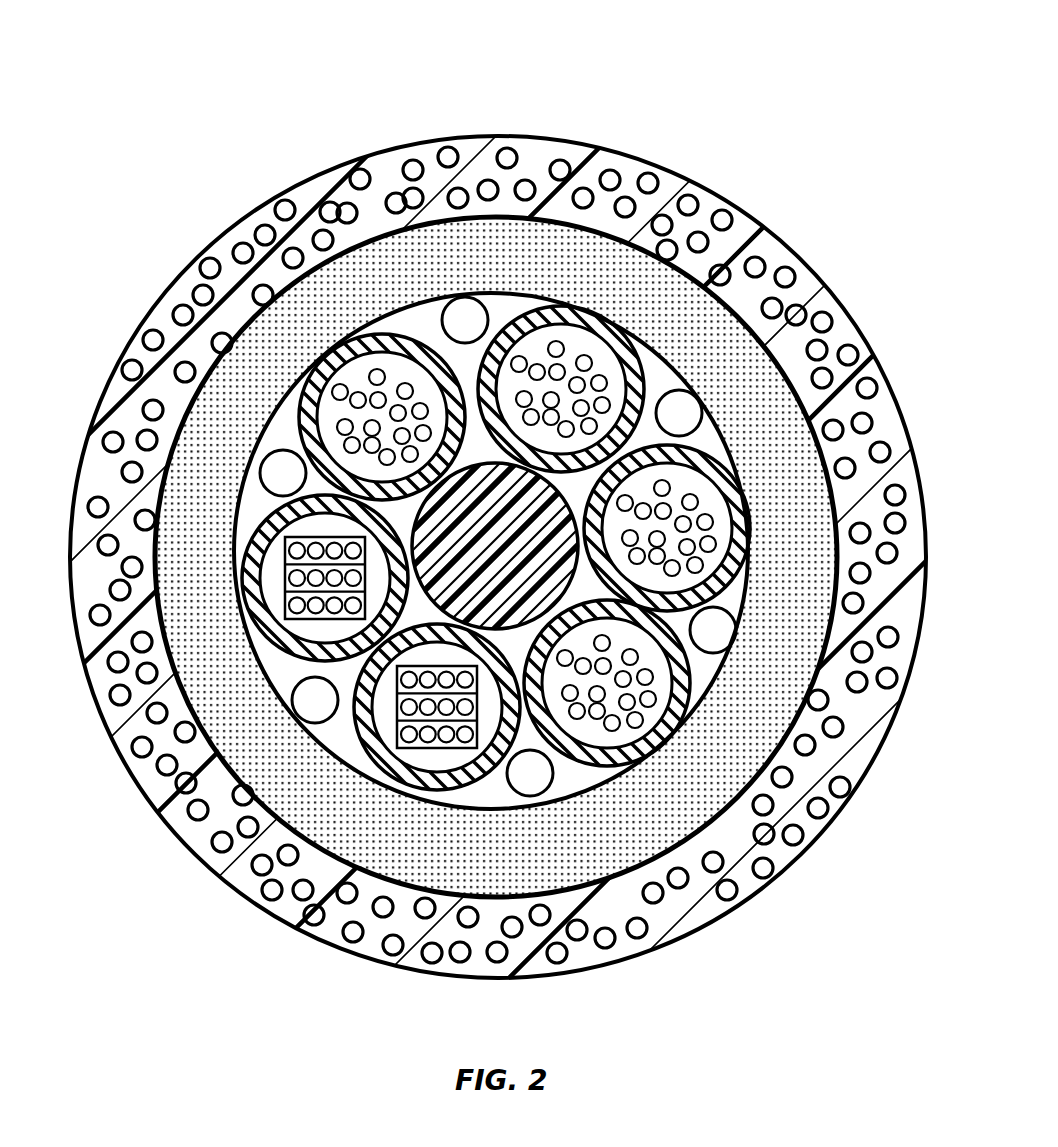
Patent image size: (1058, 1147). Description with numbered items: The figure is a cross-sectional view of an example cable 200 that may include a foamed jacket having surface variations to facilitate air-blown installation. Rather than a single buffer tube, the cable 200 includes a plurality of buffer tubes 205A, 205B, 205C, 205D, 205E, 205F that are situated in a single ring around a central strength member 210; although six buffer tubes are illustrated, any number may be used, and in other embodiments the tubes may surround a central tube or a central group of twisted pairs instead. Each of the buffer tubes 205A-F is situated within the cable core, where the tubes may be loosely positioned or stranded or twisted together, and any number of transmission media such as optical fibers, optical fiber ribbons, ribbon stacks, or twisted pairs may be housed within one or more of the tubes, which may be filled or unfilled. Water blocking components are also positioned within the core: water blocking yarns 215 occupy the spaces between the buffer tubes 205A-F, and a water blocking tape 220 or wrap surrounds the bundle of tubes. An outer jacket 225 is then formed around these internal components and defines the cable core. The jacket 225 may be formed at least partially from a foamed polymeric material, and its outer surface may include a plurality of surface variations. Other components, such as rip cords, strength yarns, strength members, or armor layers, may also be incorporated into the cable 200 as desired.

The cable 200 is at (793, 90).
The buffer tube 205A is at (626, 326).
The buffer tube 205B is at (750, 481).
The buffer tube 205C is at (692, 688).
The buffer tube 205D is at (449, 792).
The buffer tube 205E is at (280, 660).
The buffer tube 205F is at (285, 414).
The central strength member 210 is at (497, 574).
The water blocking yarns 215 is at (301, 722).
The water blocking tape 220 is at (676, 815).
The outer jacket 225 is at (431, 166).